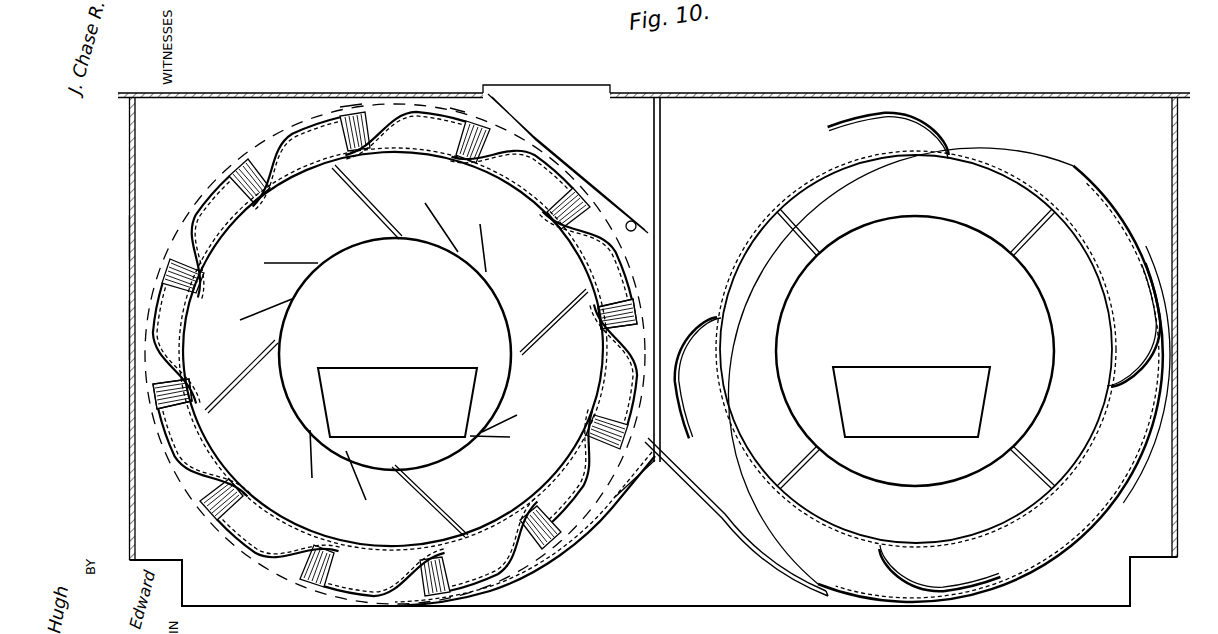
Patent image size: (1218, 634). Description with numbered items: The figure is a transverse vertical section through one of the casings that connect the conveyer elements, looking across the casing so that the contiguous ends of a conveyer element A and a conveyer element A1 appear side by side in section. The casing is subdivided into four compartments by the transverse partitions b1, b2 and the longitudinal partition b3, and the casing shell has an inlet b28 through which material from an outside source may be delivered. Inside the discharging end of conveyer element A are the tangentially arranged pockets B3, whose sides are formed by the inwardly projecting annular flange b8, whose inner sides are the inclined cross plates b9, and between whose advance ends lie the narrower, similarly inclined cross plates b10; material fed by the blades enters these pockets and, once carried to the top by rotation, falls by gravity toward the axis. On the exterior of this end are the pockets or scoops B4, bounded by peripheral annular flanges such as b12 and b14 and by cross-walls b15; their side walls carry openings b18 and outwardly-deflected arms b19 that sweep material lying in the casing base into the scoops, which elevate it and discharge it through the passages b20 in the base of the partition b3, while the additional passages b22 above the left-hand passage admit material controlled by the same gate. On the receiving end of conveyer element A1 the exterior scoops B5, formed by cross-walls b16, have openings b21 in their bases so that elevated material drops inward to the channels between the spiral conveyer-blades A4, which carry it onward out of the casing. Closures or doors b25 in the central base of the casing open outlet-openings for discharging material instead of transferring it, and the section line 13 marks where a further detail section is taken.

The transverse partition b1 is at (635, 148).
The transverse partition b2 is at (763, 133).
The longitudinal partition b3 is at (660, 128).
The additional passage or opening b22 is at (660, 192).
The annular flange or shoulder b8 is at (278, 440).
The cross plate or bar b9 is at (462, 490).
The additional cross plate or bar b10 is at (525, 410).
The annular flange or shoulder b12 is at (222, 443).
The annular flange or shoulder b14 is at (715, 452).
The cross-wall b15 is at (180, 450).
The cross-wall b16 is at (895, 578).
The opening b18 is at (238, 505).
The outwardly-deflected projection or arm b19 is at (580, 525).
The passage or opening b20 is at (657, 313).
The opening b21 is at (945, 540).
The closure or door b25 is at (722, 530).
The inlet b28 is at (129, 262).
The section line 13 is at (150, 425).
The conveyer element A is at (150, 330).
The conveyer element A1 is at (1100, 410).
The spirally-arranged conveyer-blade A4 is at (795, 462).
The pocket B3 is at (393, 349).
The pocket or scoop B4 is at (612, 388).
The pocket or scoop B5 is at (965, 578).